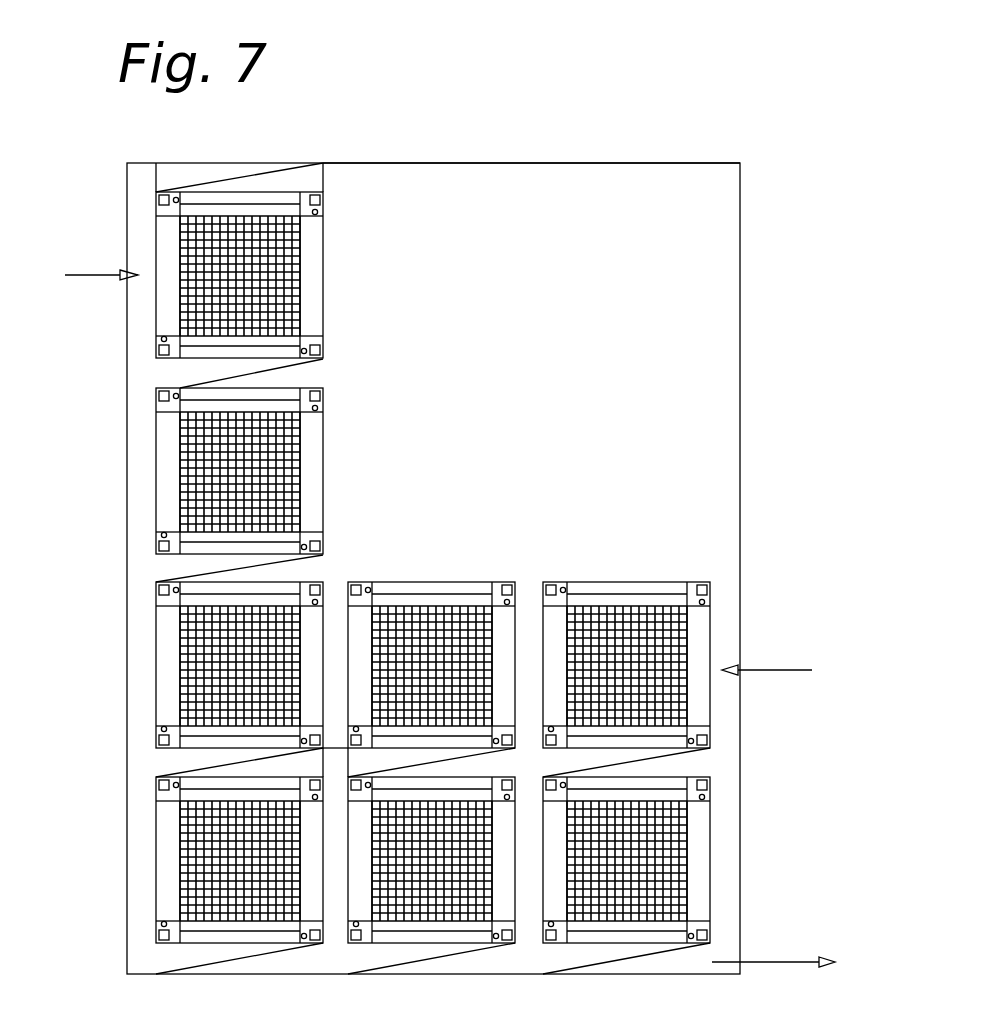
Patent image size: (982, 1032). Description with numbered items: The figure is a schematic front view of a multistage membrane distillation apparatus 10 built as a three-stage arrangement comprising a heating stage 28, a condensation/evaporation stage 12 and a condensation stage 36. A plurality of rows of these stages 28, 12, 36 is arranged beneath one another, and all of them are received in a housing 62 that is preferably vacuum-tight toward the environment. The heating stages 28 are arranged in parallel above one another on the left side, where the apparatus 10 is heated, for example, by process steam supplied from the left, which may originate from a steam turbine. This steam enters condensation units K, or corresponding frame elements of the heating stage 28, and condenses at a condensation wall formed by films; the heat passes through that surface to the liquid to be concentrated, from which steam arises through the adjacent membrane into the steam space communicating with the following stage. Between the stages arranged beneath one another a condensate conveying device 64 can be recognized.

The multistage membrane distillation apparatus 10 is at (507, 54).
The condensation/evaporation stage 12 is at (448, 171).
The heating stage 28 is at (250, 178).
The condensation stage 36 is at (690, 166).
The housing 62 is at (743, 226).
The condensate conveying device 64 is at (182, 388).
The condensation unit K is at (148, 319).